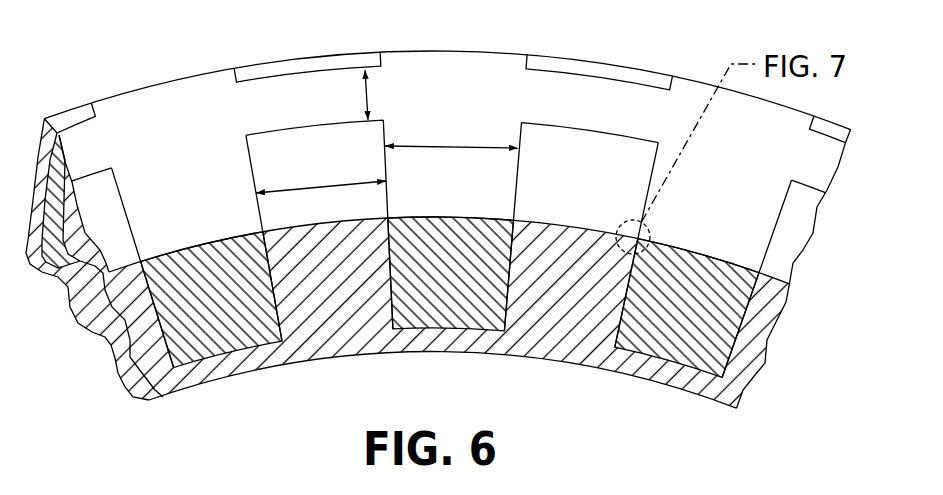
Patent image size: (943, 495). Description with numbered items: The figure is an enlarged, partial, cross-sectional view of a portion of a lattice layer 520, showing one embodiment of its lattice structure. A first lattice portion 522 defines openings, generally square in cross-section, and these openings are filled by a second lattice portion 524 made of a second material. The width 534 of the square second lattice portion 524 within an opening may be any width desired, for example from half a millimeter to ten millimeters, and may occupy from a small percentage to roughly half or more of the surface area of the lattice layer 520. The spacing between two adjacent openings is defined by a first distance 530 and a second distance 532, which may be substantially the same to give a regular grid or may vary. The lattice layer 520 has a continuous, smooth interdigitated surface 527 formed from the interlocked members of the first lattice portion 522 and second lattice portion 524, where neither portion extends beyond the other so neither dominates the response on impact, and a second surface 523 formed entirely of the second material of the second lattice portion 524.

The lattice layer 520 is at (746, 404).
The first lattice portion 522 is at (530, 100).
The second surface 523 is at (253, 373).
The second lattice portion 524 is at (287, 145).
The smooth interdigitated surface 527 is at (180, 74).
The first distance 530 is at (447, 145).
The second distance 532 is at (368, 93).
The width 534 is at (338, 181).